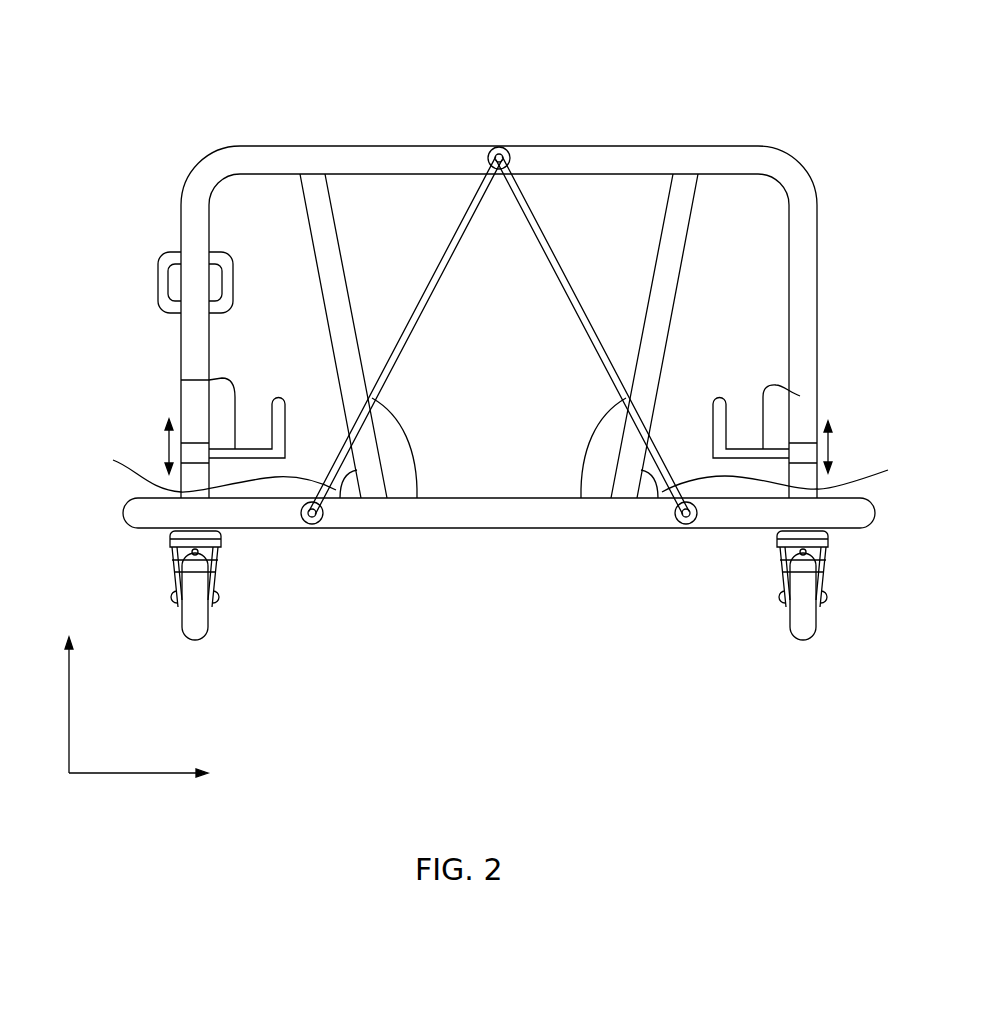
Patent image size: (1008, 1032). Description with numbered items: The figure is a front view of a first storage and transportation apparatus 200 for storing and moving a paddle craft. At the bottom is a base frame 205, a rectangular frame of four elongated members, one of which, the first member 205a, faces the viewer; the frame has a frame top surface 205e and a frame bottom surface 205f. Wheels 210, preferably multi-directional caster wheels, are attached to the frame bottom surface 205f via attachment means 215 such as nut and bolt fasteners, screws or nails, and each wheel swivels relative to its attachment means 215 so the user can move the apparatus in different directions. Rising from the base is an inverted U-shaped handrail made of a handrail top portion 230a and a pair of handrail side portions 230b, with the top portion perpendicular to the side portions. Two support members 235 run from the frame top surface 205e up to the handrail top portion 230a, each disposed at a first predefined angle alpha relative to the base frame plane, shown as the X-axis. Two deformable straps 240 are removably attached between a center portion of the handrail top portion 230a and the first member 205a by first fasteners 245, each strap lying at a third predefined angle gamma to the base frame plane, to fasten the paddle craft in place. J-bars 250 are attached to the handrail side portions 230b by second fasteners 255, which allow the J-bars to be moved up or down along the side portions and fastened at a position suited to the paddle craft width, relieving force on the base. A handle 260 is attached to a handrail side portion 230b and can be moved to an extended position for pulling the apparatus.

The first storage and transportation apparatus 200 is at (157, 58).
The base frame 205 is at (116, 502).
The first member 205a is at (528, 515).
The frame top surface 205e is at (481, 498).
The frame bottom surface 205f is at (444, 528).
The wheels 210 is at (197, 625).
The attachment means 215 is at (222, 532).
The handrail top portion 230a is at (363, 146).
The handrail side portions 230b is at (181, 228).
The support members 235 is at (325, 230).
The deformable straps 240 is at (432, 291).
The first fastener 245 is at (494, 147).
The J-bars 250 is at (279, 398).
The second fasteners 255 is at (181, 380).
The handle 260 is at (158, 283).